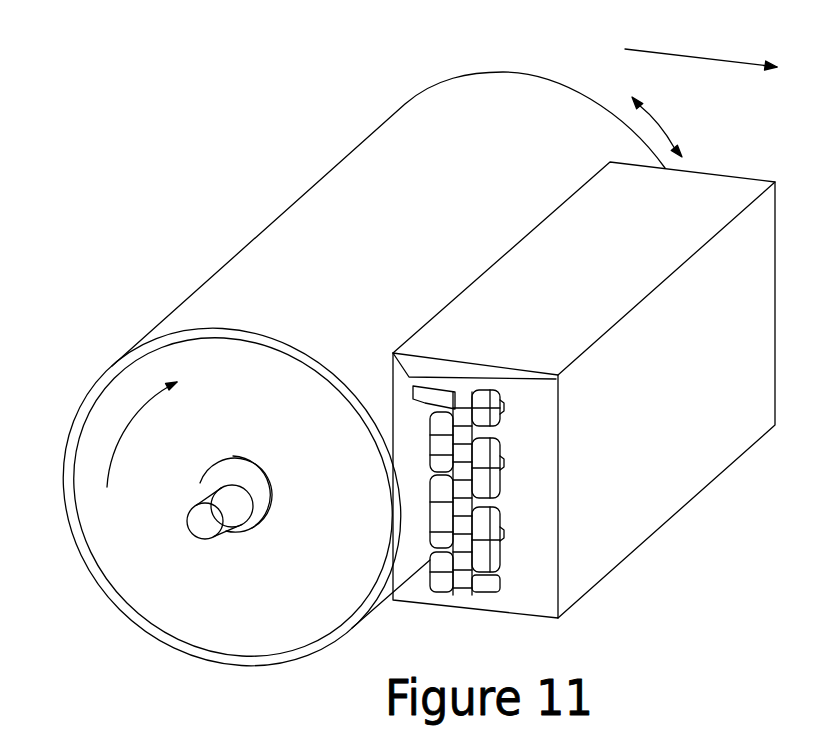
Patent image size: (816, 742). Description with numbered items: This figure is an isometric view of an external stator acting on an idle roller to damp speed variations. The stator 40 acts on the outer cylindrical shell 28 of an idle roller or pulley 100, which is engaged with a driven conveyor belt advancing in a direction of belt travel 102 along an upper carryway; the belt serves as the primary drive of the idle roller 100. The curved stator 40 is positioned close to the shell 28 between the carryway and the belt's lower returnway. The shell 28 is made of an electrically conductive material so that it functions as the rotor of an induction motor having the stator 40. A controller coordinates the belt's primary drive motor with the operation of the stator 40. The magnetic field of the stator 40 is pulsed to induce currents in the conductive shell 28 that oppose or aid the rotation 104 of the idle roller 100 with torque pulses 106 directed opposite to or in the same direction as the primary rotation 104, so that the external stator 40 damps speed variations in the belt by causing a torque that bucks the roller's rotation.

The outer cylindrical shell 28 is at (242, 268).
The idle roller 100 is at (240, 640).
The rotation 104 is at (123, 433).
The stator 40 is at (661, 523).
The direction of belt travel 102 is at (673, 52).
The torque pulses 106 is at (655, 123).